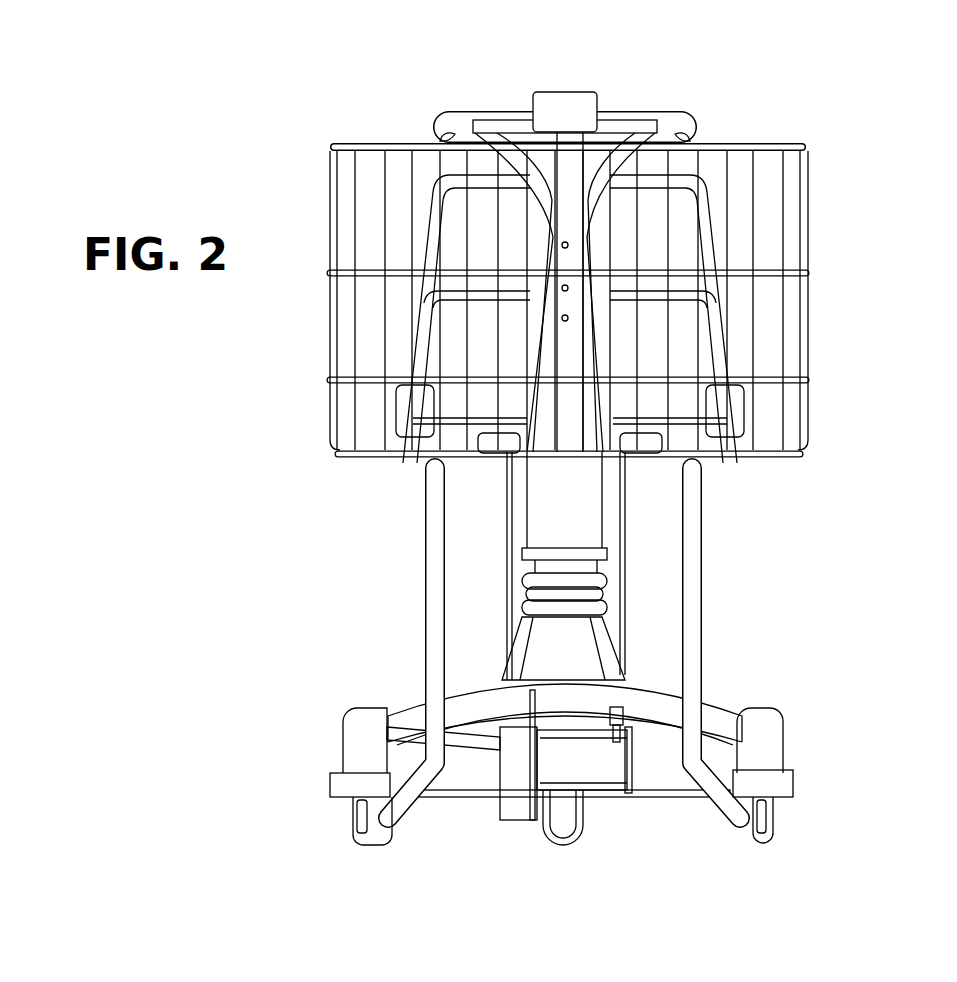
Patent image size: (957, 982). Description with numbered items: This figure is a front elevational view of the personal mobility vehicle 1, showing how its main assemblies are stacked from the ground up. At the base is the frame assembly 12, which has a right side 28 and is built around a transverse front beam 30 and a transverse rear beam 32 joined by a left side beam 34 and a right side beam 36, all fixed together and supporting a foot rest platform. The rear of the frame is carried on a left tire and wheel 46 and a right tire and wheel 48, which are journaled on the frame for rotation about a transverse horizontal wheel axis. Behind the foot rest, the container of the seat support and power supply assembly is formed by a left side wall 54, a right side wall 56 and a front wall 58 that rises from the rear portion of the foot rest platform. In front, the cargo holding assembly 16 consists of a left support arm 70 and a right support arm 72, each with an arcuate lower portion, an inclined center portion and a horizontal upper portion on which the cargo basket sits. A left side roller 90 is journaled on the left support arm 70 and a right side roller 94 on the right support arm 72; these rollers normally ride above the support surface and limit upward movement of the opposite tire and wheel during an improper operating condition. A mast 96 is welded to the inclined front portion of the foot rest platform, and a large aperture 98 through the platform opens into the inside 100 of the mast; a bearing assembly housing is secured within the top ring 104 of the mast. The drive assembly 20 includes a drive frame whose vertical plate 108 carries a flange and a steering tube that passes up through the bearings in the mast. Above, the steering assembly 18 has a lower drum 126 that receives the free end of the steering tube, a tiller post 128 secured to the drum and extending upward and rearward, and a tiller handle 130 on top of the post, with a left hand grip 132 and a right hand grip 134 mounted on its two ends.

The shopping cart 1 is at (882, 203).
The frame assembly 12 is at (729, 683).
The cargo holding assembly 16 is at (302, 332).
The steering assembly 18 is at (452, 94).
The drive assembly 20 is at (497, 847).
The right side 28 is at (395, 702).
The transverse front beam 30 is at (470, 695).
The transverse rear beam 32 is at (598, 795).
The left side beam 34 is at (718, 732).
The right side beam 36 is at (372, 715).
The left tire and wheel 46 is at (755, 845).
The right tire and wheel 48 is at (375, 845).
The left side wall 54 is at (625, 520).
The right side wall 56 is at (505, 475).
The front wall 58 is at (515, 503).
The left support arm 70 is at (702, 562).
The right support arm 72 is at (425, 480).
The left side roller 90 is at (770, 843).
The right side roller 94 is at (363, 837).
The mast 96 is at (528, 640).
The large aperture 98 is at (475, 730).
The inside of the mast 100 is at (640, 700).
The top ring 104 is at (608, 603).
The vertical plate 108 is at (530, 820).
The lower drum 126 is at (608, 576).
The tiller post 128 is at (575, 410).
The tiller handle 130 is at (566, 91).
The left hand grip 132 is at (700, 125).
The right hand grip 134 is at (445, 132).